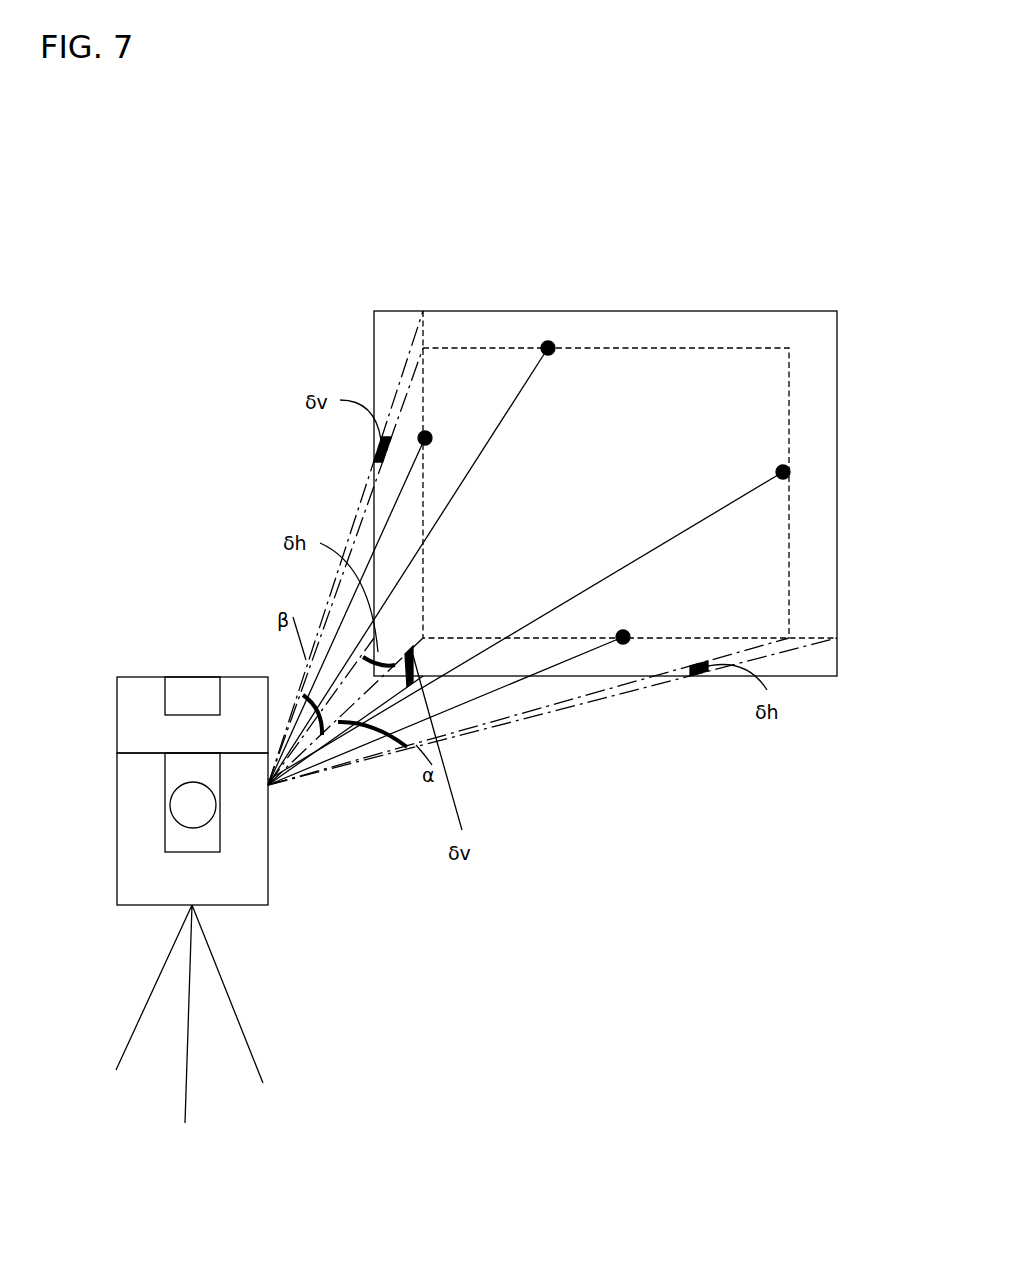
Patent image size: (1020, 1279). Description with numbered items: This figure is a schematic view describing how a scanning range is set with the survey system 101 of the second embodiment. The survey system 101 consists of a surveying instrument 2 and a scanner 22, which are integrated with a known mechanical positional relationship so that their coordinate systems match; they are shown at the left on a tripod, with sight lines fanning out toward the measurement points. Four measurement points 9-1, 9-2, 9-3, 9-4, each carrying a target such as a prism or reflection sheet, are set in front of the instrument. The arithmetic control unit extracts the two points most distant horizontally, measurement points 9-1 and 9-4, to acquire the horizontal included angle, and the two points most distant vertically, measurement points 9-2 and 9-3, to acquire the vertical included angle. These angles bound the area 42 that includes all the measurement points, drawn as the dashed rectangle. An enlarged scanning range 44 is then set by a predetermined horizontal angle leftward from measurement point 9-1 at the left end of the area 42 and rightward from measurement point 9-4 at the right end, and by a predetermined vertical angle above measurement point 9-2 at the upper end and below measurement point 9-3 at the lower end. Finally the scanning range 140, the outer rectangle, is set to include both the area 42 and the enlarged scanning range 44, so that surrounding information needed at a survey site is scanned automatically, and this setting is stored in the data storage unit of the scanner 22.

The survey system 101 is at (165, 662).
The scanner 22 is at (117, 711).
The surveying instrument 2 is at (117, 852).
The scanning range 140 is at (645, 311).
The enlarged scanning range 44 is at (810, 360).
The area including all measurement points 42 is at (790, 420).
The measurement point 9-1 is at (427, 432).
The measurement point 9-2 is at (548, 341).
The measurement point 9-3 is at (621, 644).
The measurement point 9-4 is at (790, 470).